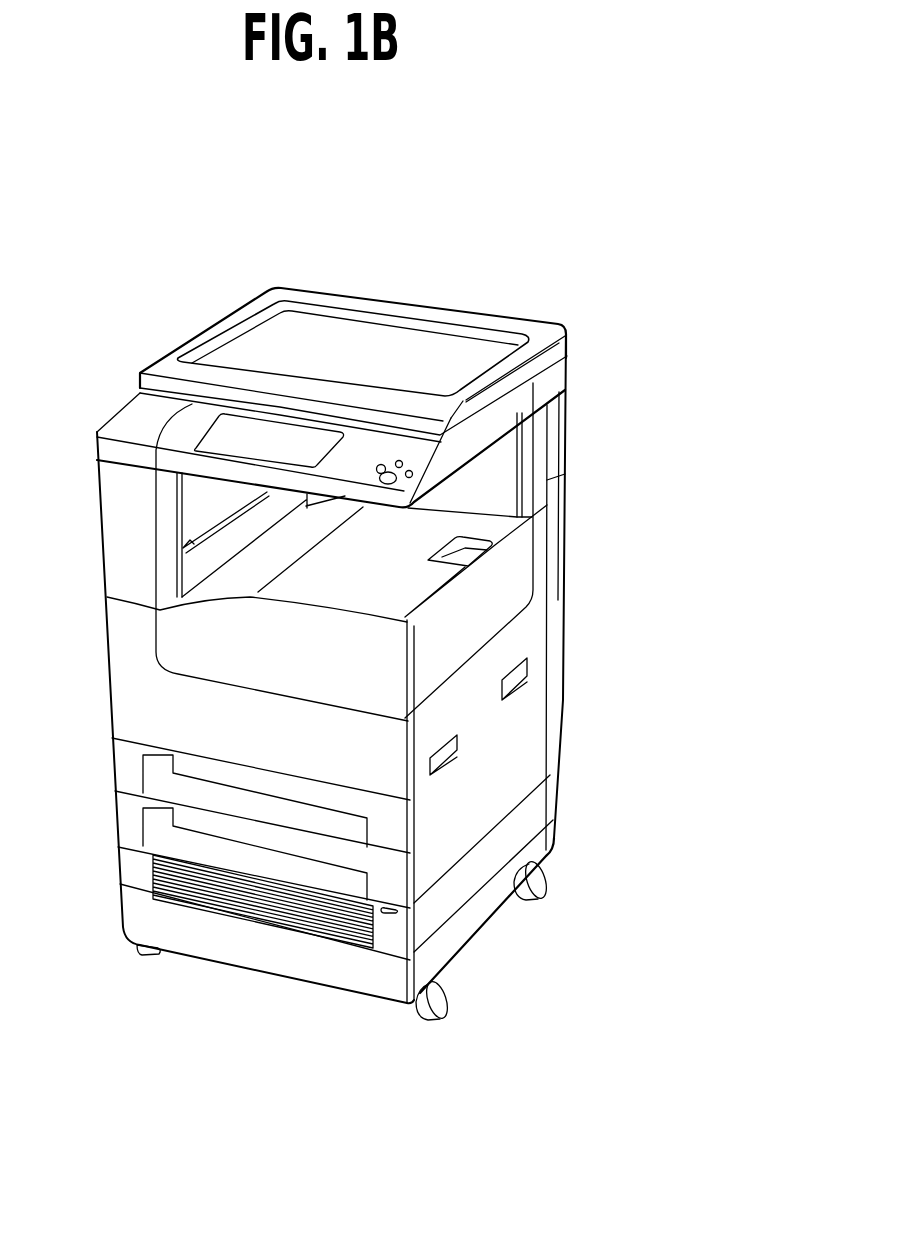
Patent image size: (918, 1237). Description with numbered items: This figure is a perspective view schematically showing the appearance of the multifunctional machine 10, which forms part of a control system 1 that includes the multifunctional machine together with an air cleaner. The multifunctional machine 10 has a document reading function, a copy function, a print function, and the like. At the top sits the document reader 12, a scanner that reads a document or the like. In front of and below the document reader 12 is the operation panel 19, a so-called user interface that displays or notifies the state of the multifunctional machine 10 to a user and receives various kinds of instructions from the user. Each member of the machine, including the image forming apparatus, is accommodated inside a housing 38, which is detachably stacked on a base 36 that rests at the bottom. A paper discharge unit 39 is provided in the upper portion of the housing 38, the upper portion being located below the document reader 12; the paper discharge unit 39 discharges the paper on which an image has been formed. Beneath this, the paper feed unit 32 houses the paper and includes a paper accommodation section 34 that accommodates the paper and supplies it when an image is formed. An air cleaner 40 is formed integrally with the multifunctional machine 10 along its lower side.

The control system 1 is at (428, 247).
The multifunctional machine 10 is at (487, 301).
The document reader 12 is at (254, 300).
The operation panel 19 is at (229, 439).
The paper feed unit 32 is at (248, 1035).
The paper accommodation section 34 is at (213, 800).
The base 36 is at (537, 838).
The housing 38 is at (529, 722).
The paper discharge unit 39 is at (377, 569).
The air cleaner 40 is at (133, 869).